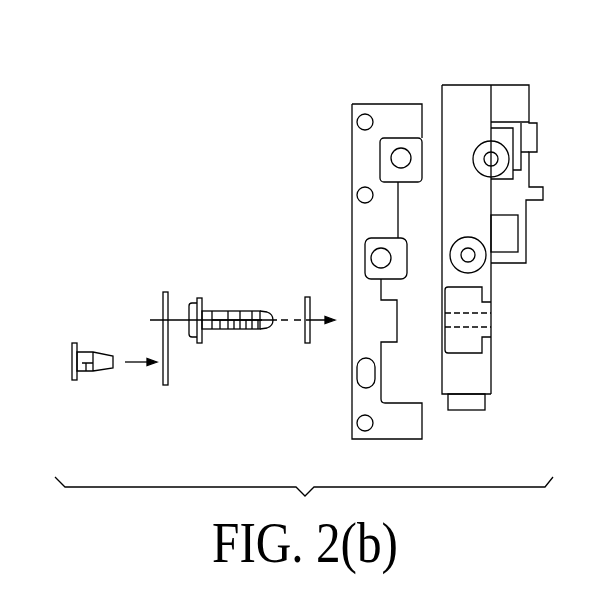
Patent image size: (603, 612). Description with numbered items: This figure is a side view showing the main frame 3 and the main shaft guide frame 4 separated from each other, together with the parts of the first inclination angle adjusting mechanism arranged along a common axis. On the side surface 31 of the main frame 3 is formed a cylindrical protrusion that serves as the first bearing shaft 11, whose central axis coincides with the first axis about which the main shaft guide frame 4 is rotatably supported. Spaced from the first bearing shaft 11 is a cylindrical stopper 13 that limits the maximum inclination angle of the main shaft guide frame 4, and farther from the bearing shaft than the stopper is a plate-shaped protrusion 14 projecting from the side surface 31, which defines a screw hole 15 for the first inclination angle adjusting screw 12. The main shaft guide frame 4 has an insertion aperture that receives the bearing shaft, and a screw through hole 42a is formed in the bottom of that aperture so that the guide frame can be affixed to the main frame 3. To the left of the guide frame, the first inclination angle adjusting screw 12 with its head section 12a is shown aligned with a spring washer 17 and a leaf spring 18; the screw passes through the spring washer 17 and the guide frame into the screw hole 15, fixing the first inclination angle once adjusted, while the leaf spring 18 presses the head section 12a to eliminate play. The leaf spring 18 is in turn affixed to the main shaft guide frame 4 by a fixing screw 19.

The main frame 3 is at (478, 421).
The main shaft guide frame 4 is at (367, 90).
The first bearing shaft (cylindrical protrusion) 11 is at (507, 159).
The first inclination angle adjusting screw 12 is at (267, 330).
The head section 12a is at (202, 297).
The cylindrical stopper 13 is at (480, 265).
The plate-shaped protrusion 14 is at (491, 337).
The screw hole 15 is at (491, 318).
The spring washer 17 is at (306, 295).
The leaf spring 18 is at (163, 387).
The fixing screw 19 is at (90, 352).
The side surface 31 is at (458, 110).
The screw through hole 42a is at (392, 160).